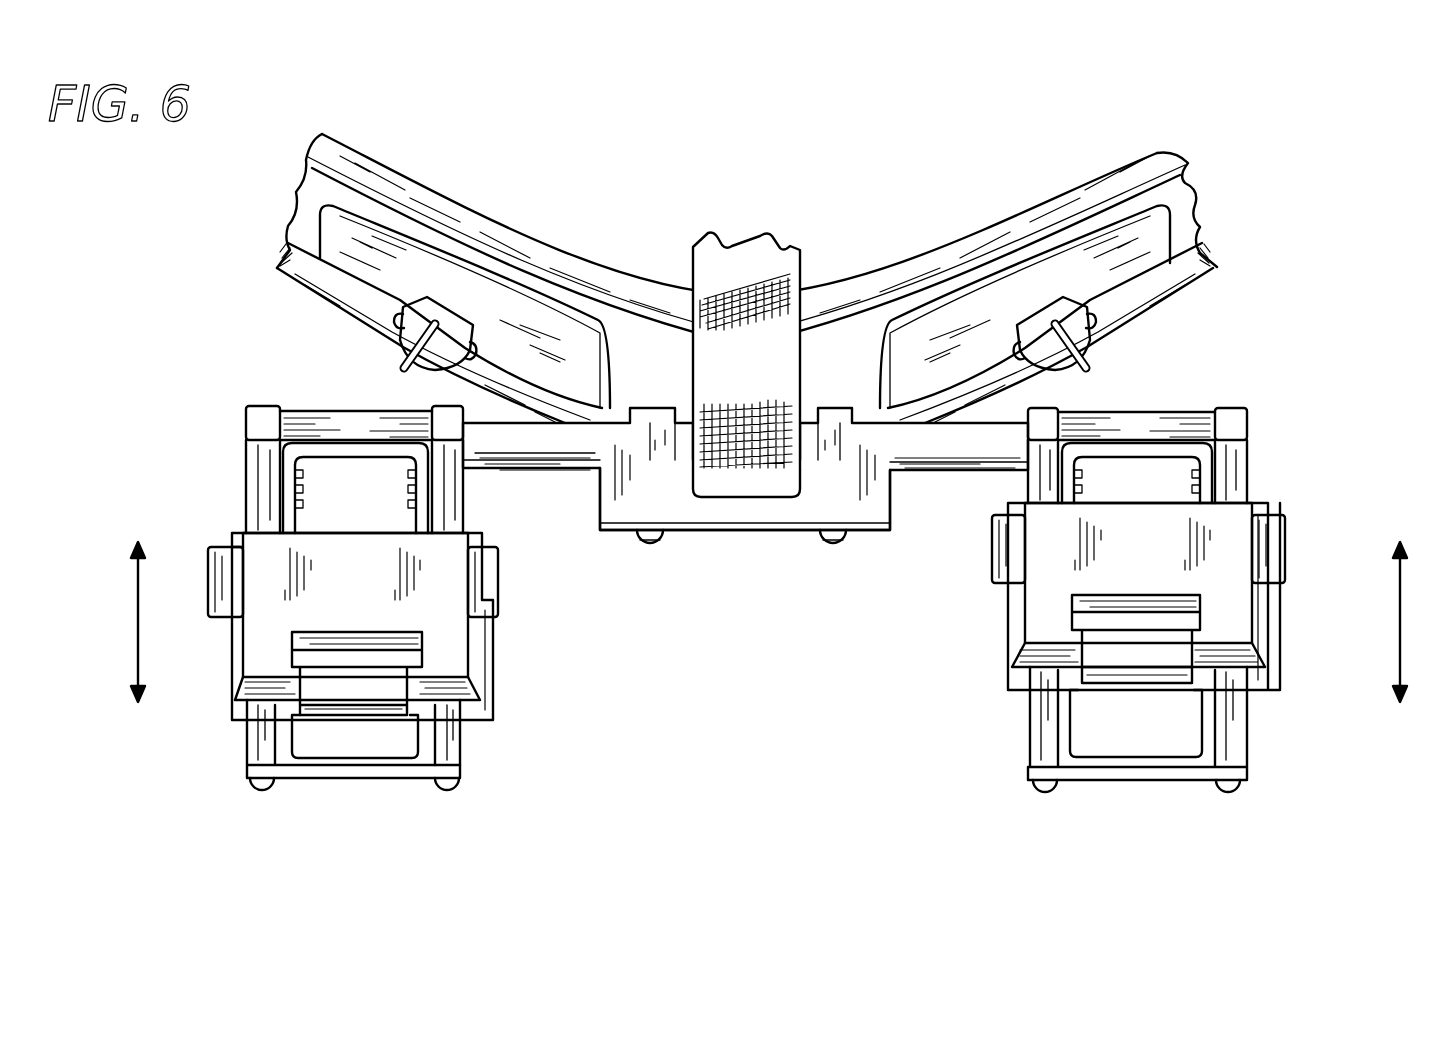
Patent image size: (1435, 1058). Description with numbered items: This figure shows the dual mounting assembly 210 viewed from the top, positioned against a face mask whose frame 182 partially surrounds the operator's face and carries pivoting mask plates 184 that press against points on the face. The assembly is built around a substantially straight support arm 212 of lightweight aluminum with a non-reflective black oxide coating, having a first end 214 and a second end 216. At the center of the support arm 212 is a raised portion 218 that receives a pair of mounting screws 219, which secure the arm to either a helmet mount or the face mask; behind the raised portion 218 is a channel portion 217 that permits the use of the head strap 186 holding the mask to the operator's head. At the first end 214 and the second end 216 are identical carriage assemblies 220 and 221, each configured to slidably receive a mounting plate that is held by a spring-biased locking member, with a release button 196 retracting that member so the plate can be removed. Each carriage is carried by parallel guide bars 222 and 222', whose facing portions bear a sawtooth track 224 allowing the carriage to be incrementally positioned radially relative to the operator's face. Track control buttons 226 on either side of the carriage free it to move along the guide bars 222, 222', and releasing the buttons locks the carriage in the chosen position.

The frame 182 is at (1170, 290).
The mask plates 184 is at (1147, 253).
The head strap 186 is at (703, 257).
The release button 196 is at (350, 690).
The dual mounting assembly 210 is at (762, 752).
The support arm 212 is at (632, 515).
The first end 214 is at (363, 427).
The second end 216 is at (1143, 427).
The channel portion 217 is at (757, 490).
The raised portion 218 is at (732, 515).
The mounting screws 219 is at (640, 540).
The carriage assembly 220 is at (447, 657).
The carriage assembly 221 is at (1043, 605).
The guide bar 222 is at (300, 760).
The guide bar 222' is at (507, 742).
The sawtooth track 224 is at (287, 483).
The track control buttons 226 is at (220, 582).